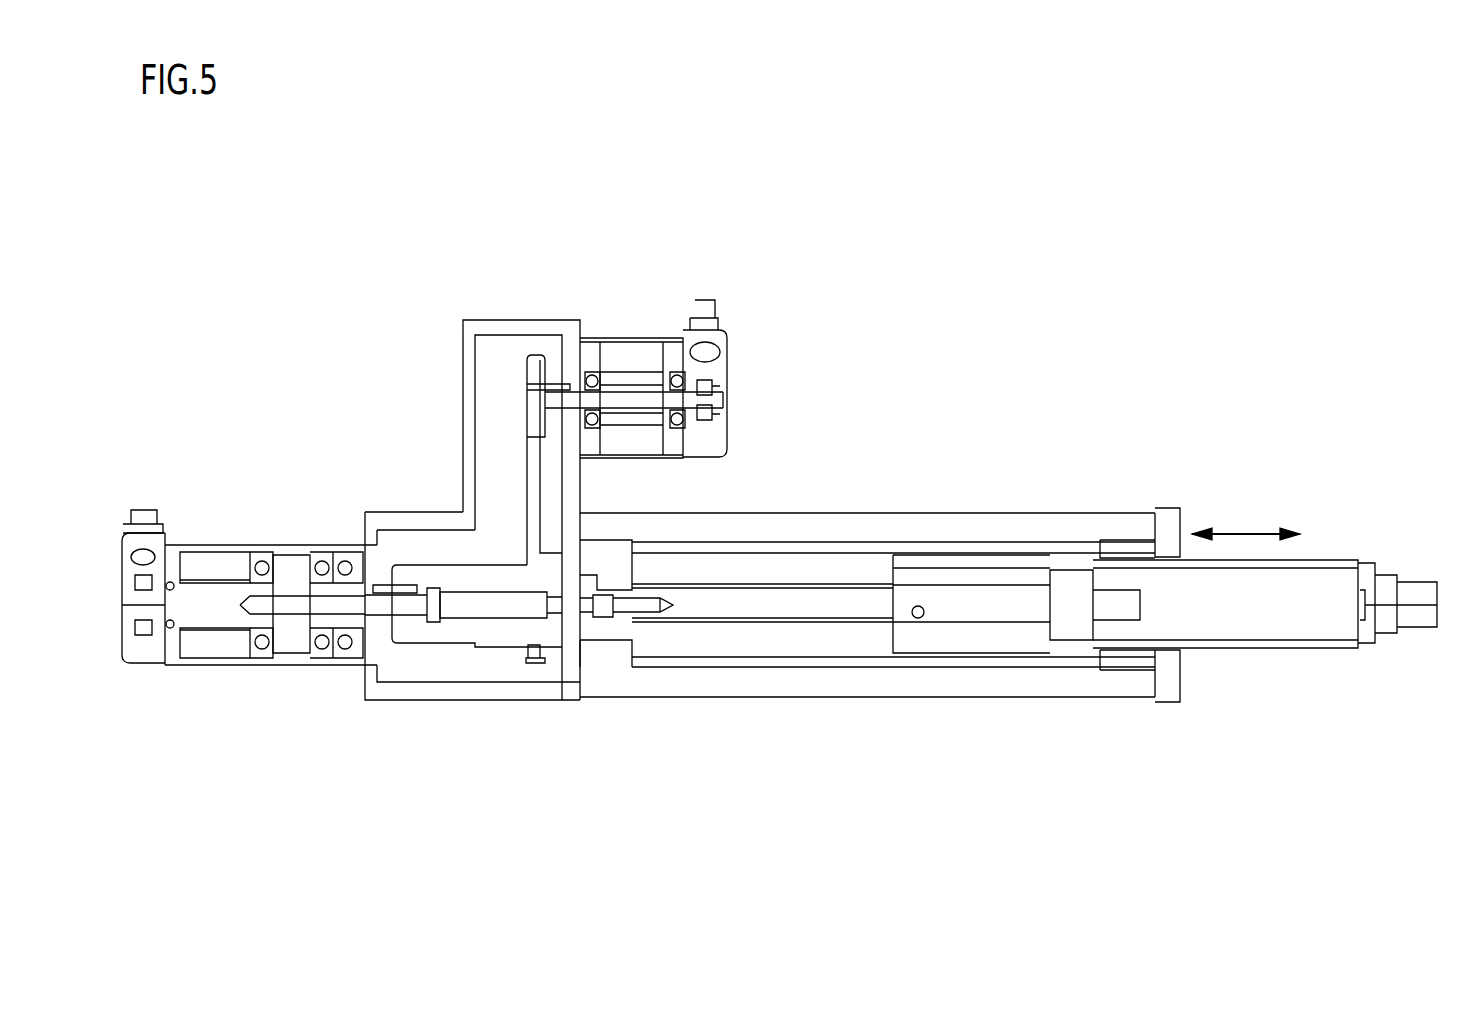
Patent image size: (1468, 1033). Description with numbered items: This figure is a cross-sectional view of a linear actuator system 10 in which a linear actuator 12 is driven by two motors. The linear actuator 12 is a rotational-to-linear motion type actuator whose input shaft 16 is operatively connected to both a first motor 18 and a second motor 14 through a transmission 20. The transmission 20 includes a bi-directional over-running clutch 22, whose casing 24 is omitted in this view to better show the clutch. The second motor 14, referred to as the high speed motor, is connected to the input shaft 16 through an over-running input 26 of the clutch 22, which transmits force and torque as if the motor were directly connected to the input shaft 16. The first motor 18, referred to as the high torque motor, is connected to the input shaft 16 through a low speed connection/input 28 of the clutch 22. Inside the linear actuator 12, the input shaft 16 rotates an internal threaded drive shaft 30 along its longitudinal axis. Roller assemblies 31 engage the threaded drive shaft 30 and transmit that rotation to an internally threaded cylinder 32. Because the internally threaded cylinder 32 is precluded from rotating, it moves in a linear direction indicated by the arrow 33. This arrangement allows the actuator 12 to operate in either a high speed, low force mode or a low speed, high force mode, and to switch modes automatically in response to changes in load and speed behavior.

The linear actuator system 10 is at (905, 268).
The linear actuator 12 is at (765, 685).
The second motor 14 is at (622, 355).
The input shaft 16 is at (637, 605).
The first motor 18 is at (218, 652).
The transmission 20 is at (465, 635).
The bi-directional over-running clutch 22 is at (520, 608).
The casing 24 is at (470, 388).
The over-running input 26 is at (540, 653).
The low speed connection/input 28 is at (435, 613).
The threaded drive shaft 30 is at (950, 605).
The roller assemblies 31 is at (1077, 630).
The internally threaded cylinder 32 is at (1275, 612).
The arrow 33 is at (1240, 526).